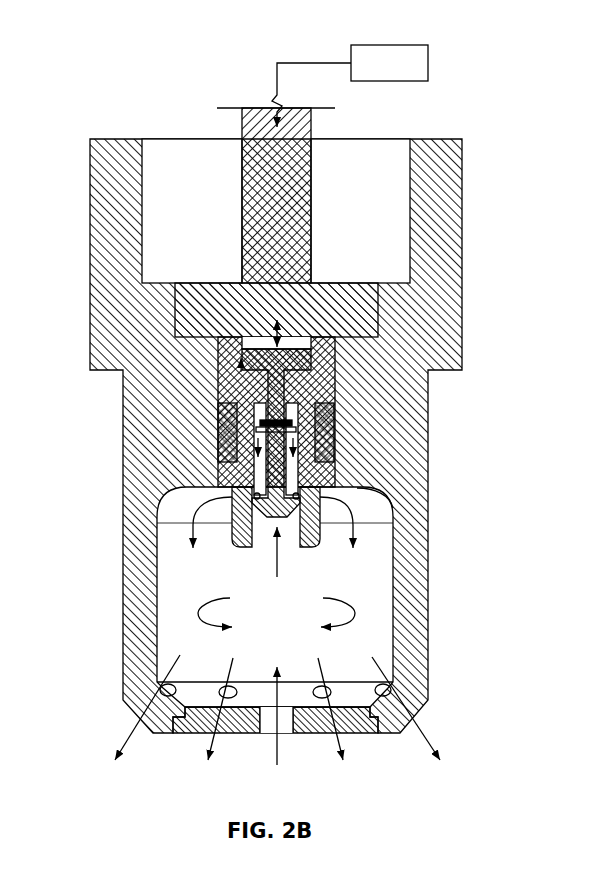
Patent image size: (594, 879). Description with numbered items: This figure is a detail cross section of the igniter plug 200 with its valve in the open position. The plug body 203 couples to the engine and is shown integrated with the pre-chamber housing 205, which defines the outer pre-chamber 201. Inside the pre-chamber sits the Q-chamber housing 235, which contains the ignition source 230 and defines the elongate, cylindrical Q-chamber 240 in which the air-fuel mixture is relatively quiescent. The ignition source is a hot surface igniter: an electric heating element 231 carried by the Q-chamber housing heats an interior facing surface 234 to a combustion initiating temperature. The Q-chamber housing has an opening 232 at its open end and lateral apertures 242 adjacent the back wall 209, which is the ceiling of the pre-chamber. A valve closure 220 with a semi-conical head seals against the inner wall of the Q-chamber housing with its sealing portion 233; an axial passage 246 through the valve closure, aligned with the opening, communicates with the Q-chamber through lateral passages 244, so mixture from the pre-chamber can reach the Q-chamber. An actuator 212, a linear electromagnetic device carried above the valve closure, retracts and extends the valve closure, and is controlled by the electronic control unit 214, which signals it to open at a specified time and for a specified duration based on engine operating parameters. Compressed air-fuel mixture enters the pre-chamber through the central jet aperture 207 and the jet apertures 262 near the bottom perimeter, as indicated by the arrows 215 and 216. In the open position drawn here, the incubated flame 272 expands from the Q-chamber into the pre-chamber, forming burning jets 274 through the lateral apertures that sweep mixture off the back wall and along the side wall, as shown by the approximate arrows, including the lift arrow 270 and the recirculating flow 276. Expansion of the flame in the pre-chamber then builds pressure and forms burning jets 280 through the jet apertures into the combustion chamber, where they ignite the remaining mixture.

The igniter plug 200 is at (110, 57).
The pre-chamber 201 is at (170, 650).
The plug body 203 is at (455, 178).
The pre-chamber housing 205 is at (410, 648).
The central jet aperture 207 is at (358, 727).
The back wall 209 is at (393, 511).
The actuator 212 is at (300, 182).
The electronic control unit 214 is at (390, 45).
The arrow indicating flow through central jet aperture 215 is at (277, 745).
The arrows indicating flow through jet apertures 216 is at (228, 690).
The valve closure 220 is at (241, 358).
The ignition source 230 is at (335, 405).
The electric heating element 231 is at (337, 448).
The opening 232 is at (283, 542).
The sealing portion 233 is at (288, 540).
The heated surface 234 is at (335, 425).
The Q-chamber housing 235 is at (330, 360).
The Q-chamber 240 is at (262, 432).
The lateral apertures 242 is at (330, 498).
The lateral passages 244 is at (240, 418).
The axial passage 246 is at (267, 548).
The jet apertures 262 is at (322, 690).
The needle lift direction 270 is at (275, 568).
The incubated flame 272 is at (335, 413).
The burning jets 274 is at (395, 510).
The recirculation flow 276 is at (356, 607).
The burning jets 280 is at (400, 731).